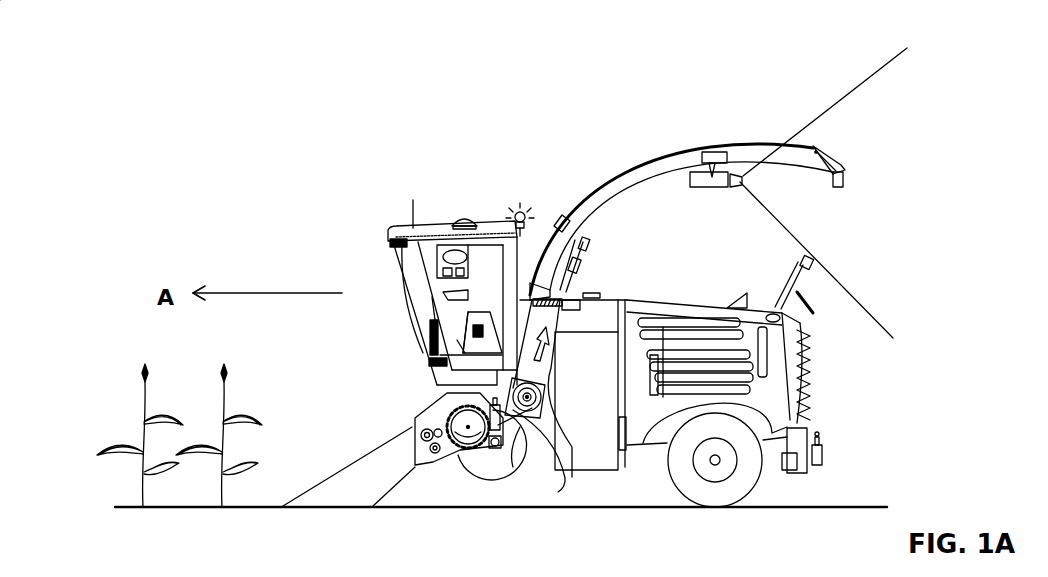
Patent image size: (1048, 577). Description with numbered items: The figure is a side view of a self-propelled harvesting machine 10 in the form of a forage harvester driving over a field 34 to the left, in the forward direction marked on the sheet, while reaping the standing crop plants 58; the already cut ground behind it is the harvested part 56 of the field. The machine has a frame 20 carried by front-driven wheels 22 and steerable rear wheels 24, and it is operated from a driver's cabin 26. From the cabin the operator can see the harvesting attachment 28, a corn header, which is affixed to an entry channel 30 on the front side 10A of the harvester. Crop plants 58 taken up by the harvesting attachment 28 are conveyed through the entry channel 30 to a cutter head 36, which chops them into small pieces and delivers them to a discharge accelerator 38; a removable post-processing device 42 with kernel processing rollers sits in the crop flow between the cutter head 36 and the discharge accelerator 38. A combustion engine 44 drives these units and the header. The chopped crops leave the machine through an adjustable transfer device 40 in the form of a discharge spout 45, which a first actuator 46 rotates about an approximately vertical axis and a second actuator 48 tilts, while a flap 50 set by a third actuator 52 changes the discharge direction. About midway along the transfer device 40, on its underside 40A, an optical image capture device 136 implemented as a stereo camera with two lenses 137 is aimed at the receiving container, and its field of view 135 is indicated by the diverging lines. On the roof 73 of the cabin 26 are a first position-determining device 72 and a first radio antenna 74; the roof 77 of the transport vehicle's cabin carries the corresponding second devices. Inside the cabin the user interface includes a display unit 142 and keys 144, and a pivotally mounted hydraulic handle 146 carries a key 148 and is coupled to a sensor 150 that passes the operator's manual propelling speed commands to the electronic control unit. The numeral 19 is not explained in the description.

The harvesting machine 10 is at (858, 151).
The front side 10A is at (408, 427).
The front wheels 19 is at (781, 571).
The frame 20 is at (643, 443).
The front-driven wheels 22 is at (440, 478).
The steerable rear wheels 24 is at (740, 490).
The driver's cabin 26 is at (413, 288).
The harvesting attachment 28 is at (345, 473).
The entry channel 30 is at (403, 472).
The field 34 is at (100, 491).
The cutter head 36 is at (462, 470).
The discharge accelerator 38 is at (559, 492).
The adjustable transfer device 40 is at (608, 203).
The underside 40A is at (617, 208).
The post-processing device 42 is at (515, 470).
The combustion engine 44 is at (752, 343).
The discharge spout 45 is at (835, 152).
The first actuator 46 is at (570, 312).
The second actuator 48 is at (577, 274).
The flap 50 is at (848, 181).
The third actuator 52 is at (710, 150).
The harvested part 56 is at (868, 505).
The crop plants 58 is at (240, 422).
The first position-determining device 72 is at (471, 220).
The roof 73 is at (439, 226).
The first radio antenna 74 is at (416, 206).
The roof 77 is at (553, 571).
The field of view 135 is at (846, 192).
The optical image capture device 136 is at (663, 197).
The lenses 137 is at (740, 188).
The display unit 142 is at (460, 257).
The keys 144 is at (466, 274).
The hydraulic handle 146 is at (435, 324).
The key 148 is at (462, 297).
The sensor 150 is at (458, 358).